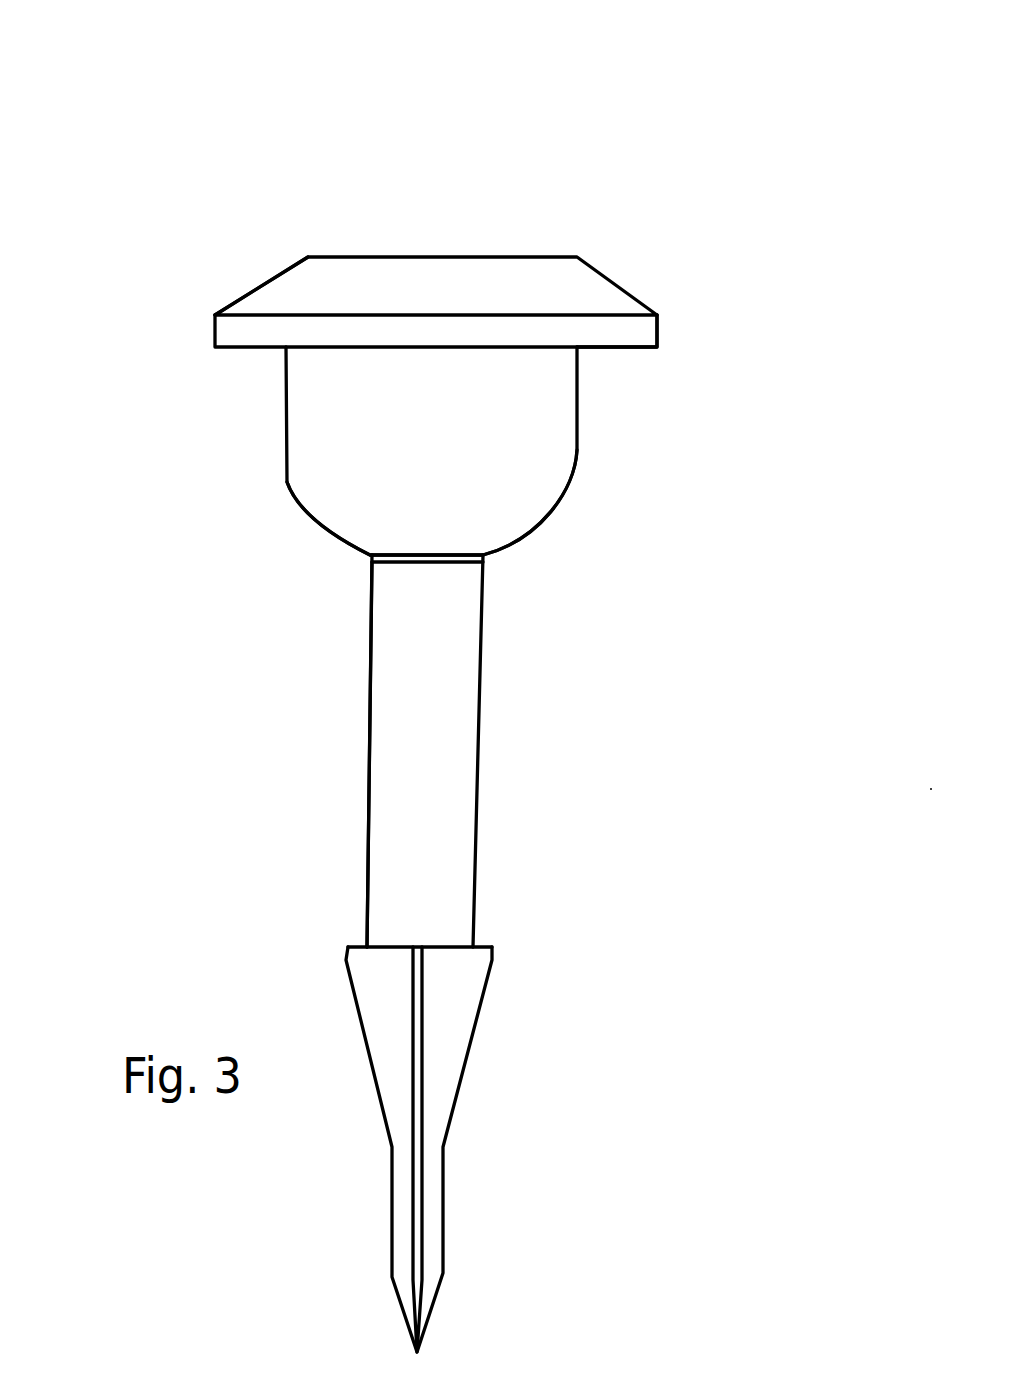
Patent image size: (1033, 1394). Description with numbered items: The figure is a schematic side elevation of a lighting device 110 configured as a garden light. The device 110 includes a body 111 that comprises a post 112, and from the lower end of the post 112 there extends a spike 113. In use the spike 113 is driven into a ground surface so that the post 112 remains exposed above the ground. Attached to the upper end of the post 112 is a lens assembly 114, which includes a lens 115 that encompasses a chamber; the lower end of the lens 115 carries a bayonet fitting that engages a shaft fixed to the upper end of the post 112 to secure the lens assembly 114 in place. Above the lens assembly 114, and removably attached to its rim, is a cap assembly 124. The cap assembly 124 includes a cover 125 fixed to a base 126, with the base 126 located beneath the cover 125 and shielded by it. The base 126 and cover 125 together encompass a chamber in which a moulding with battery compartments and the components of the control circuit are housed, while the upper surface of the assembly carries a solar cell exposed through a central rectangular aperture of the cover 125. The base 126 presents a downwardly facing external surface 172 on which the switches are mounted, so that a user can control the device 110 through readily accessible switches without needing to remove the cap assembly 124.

The lighting device 110 is at (750, 163).
The cap assembly 124 is at (613, 283).
The cover 125 is at (283, 277).
The downwardly facing external surface 172 is at (247, 348).
The base 126 is at (607, 348).
The lens assembly 114 is at (581, 503).
The lens 115 is at (290, 482).
The body 111 is at (491, 788).
The post 112 is at (377, 835).
The spike 113 is at (473, 1040).